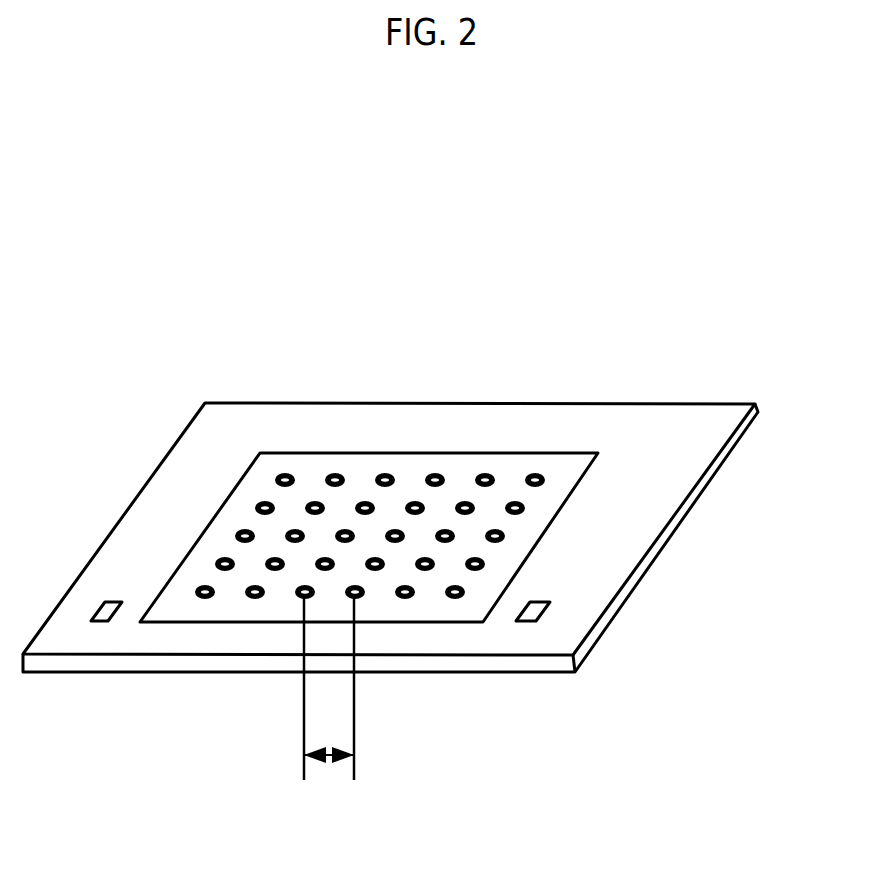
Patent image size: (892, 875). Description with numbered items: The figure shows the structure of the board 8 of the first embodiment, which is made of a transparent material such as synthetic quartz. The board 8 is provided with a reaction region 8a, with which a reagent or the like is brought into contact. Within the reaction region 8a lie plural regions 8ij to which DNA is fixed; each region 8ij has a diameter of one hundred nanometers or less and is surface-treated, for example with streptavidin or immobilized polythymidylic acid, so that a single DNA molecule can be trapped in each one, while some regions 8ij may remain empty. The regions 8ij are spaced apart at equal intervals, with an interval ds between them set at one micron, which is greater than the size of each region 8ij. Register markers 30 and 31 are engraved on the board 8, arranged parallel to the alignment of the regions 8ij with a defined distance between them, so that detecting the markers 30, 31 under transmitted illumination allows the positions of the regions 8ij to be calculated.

The board 8 is at (670, 482).
The reaction region 8a is at (300, 453).
The regions 8ij is at (483, 475).
The register marker 30 is at (102, 622).
The register marker 31 is at (535, 622).
The interval ds is at (330, 762).